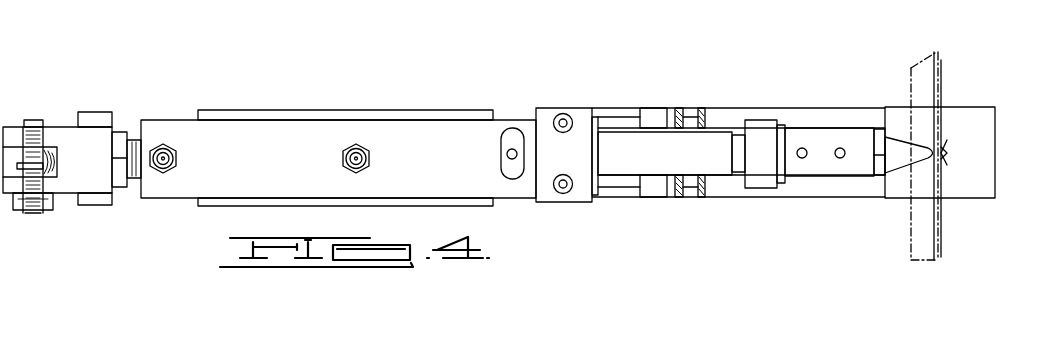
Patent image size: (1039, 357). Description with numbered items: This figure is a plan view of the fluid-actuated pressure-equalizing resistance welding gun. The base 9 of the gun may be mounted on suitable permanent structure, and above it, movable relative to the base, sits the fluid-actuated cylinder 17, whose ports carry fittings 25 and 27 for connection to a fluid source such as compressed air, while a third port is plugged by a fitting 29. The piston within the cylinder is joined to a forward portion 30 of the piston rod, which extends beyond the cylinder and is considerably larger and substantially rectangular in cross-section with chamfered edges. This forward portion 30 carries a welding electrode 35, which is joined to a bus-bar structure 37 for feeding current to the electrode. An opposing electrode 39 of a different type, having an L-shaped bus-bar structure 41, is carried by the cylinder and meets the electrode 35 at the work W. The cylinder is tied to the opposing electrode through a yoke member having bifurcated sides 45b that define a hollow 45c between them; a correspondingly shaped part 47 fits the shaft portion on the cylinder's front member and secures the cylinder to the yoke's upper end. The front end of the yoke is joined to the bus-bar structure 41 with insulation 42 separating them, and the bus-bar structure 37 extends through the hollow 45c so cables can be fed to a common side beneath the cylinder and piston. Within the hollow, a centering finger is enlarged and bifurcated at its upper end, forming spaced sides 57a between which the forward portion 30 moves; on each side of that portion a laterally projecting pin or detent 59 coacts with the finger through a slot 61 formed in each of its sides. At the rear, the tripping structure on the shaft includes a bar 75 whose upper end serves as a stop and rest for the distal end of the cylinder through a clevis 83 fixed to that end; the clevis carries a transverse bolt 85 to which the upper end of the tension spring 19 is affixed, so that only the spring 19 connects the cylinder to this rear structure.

The base 9 is at (336, 108).
The fluid-actuated cylinder 17 is at (422, 127).
The tension spring 19 is at (53, 147).
The fitting 25 is at (180, 152).
The fitting 27 is at (372, 158).
The fitting 29 is at (503, 140).
The forward portion of the piston rod 30 is at (712, 142).
The welding electrode 35 is at (892, 147).
The bus-bar structure 37 is at (768, 180).
The opposing electrode 39 is at (948, 140).
The L-shaped bus-bar structure 41 is at (982, 110).
The insulation 42 is at (880, 182).
The bifurcated sides 45b is at (758, 110).
The hollow 45c is at (617, 183).
The part 47 is at (577, 112).
The spaced sides 57a is at (652, 112).
The pin or detent 59 is at (705, 107).
The slot 61 is at (675, 108).
The bar 75 is at (98, 118).
The clevis 83 is at (68, 183).
The transverse bolt 85 is at (35, 215).
The workpiece W is at (945, 63).